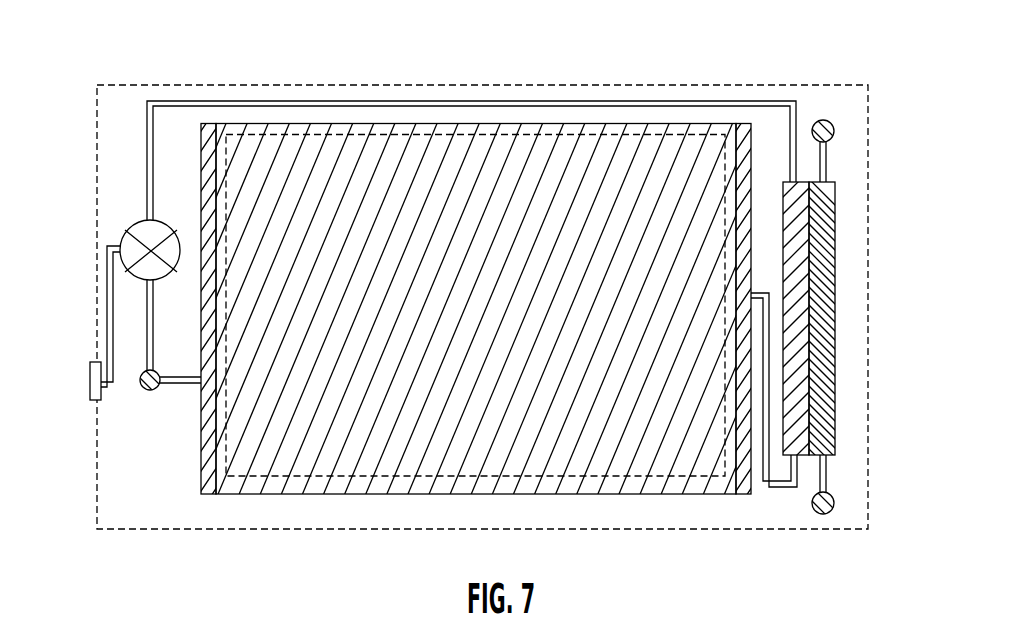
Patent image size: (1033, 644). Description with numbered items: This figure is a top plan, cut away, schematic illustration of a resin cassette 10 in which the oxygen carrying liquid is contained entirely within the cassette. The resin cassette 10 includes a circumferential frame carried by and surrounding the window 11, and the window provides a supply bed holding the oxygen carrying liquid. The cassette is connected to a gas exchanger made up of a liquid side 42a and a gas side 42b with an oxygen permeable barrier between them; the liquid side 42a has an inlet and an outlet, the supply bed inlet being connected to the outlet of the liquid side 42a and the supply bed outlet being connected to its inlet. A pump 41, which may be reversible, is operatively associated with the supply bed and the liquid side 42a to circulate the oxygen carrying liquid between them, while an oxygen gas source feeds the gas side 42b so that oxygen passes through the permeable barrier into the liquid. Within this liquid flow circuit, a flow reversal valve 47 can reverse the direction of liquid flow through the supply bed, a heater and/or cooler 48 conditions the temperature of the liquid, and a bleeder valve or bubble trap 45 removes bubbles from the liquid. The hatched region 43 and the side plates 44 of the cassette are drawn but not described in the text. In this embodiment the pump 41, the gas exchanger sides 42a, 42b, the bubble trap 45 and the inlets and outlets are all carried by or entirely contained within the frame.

The resin cassette 10 is at (327, 192).
The window 11 is at (242, 85).
The pump 41 is at (150, 250).
The liquid side 42a is at (797, 274).
The gas side 42b is at (822, 370).
The battery cells 43 is at (585, 187).
The cooling plate 44 is at (207, 477).
The bleeder valve or bubble trap 45 is at (143, 392).
The flow reversal valve 47 is at (826, 120).
The heater and/or cooler 48 is at (90, 367).